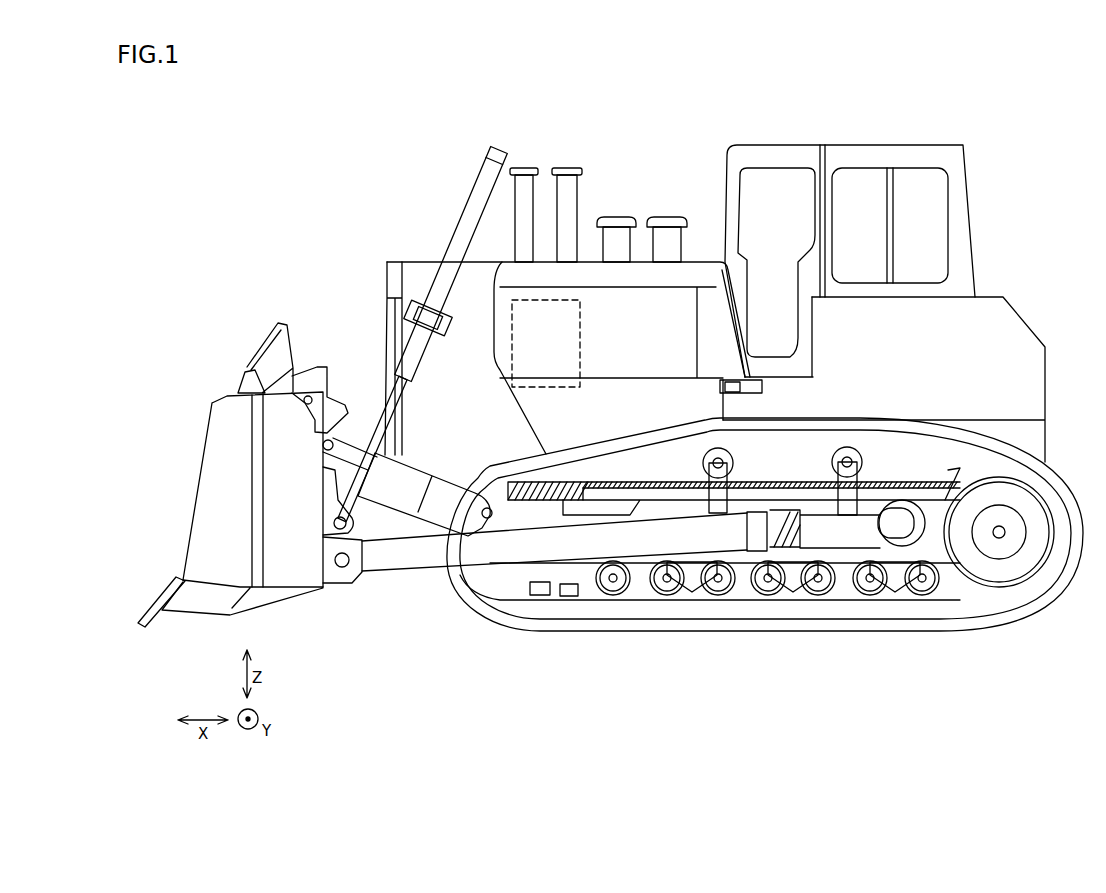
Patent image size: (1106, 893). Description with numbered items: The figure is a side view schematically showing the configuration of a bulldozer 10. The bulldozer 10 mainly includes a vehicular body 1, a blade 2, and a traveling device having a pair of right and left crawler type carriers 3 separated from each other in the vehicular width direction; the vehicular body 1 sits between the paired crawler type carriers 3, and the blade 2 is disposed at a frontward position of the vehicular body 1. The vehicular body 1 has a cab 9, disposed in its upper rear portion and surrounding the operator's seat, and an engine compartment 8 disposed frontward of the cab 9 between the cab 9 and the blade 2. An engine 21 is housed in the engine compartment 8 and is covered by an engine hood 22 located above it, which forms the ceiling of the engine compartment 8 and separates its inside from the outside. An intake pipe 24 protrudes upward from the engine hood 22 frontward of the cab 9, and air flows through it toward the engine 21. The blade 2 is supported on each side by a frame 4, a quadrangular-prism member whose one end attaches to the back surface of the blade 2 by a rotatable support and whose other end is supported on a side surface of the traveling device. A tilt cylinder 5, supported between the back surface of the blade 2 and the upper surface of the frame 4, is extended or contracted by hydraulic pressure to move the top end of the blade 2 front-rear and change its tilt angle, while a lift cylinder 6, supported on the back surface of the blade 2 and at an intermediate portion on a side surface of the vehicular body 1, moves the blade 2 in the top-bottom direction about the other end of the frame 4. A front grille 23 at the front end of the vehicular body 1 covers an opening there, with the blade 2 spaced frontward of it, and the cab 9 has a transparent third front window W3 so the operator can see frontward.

The bulldozer 10 is at (961, 92).
The vehicular body 1 is at (638, 307).
The blade 2 is at (218, 480).
The crawler type carrier 3 is at (788, 631).
The frame 4 is at (438, 553).
The tilt cylinder 5 is at (412, 480).
The lift cylinder 6 is at (480, 187).
The engine compartment 8 is at (585, 313).
The cab 9 is at (850, 157).
The engine 21 is at (540, 300).
The engine hood 22 is at (420, 262).
The front grille 23 is at (379, 298).
The intake pipe 24 is at (618, 240).
The third front window W3 is at (775, 200).